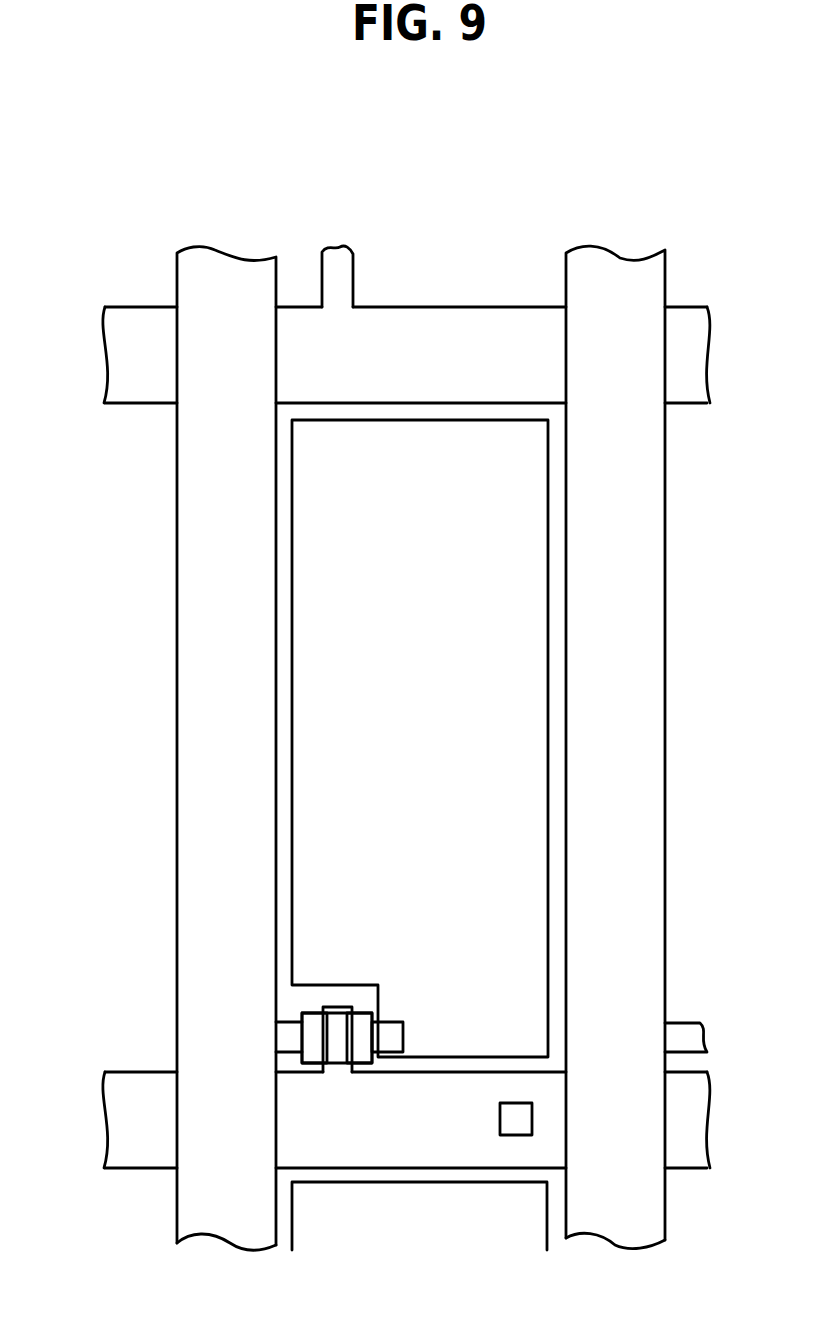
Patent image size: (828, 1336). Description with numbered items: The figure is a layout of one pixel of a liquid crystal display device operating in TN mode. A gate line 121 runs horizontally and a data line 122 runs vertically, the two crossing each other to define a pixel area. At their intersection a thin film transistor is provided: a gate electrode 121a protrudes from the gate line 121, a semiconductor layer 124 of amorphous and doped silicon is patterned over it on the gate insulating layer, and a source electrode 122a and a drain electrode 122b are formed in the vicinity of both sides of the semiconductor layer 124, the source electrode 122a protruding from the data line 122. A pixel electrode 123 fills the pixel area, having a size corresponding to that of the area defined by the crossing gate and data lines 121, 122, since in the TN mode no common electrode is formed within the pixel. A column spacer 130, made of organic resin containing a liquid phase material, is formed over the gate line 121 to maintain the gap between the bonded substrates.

The gate line 121 is at (428, 1145).
The gate electrode 121a is at (338, 1007).
The data line 122 is at (198, 943).
The source electrode 122a is at (290, 1052).
The drain electrode 122b is at (392, 1022).
The pixel electrode 123 is at (302, 835).
The semiconductor layer 124 is at (338, 1063).
The column spacer 130 is at (517, 1120).